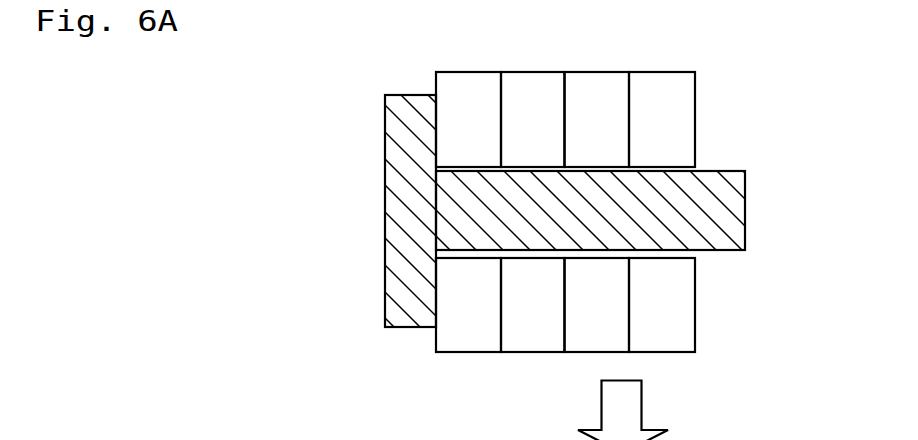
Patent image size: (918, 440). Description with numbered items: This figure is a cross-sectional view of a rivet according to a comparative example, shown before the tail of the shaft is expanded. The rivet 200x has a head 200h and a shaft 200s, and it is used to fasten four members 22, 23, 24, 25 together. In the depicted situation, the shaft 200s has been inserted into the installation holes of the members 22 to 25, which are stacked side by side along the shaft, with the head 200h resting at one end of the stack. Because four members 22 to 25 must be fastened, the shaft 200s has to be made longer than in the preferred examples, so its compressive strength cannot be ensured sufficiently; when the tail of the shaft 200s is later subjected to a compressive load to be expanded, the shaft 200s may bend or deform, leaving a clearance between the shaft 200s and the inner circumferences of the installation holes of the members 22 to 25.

The rivet 200x is at (376, 220).
The head 200h is at (414, 100).
The shaft 200s is at (741, 180).
The member 22 is at (470, 88).
The member 23 is at (537, 88).
The member 24 is at (607, 88).
The member 25 is at (668, 88).